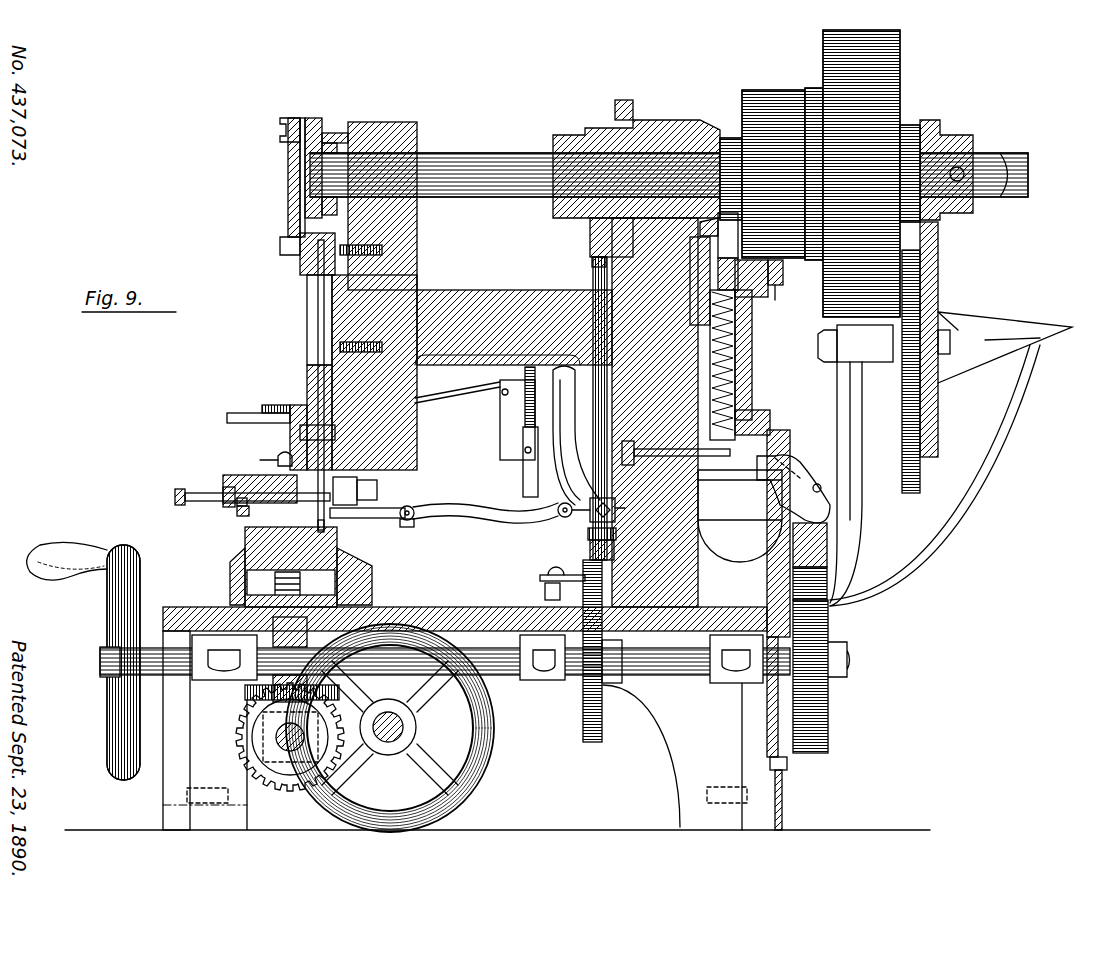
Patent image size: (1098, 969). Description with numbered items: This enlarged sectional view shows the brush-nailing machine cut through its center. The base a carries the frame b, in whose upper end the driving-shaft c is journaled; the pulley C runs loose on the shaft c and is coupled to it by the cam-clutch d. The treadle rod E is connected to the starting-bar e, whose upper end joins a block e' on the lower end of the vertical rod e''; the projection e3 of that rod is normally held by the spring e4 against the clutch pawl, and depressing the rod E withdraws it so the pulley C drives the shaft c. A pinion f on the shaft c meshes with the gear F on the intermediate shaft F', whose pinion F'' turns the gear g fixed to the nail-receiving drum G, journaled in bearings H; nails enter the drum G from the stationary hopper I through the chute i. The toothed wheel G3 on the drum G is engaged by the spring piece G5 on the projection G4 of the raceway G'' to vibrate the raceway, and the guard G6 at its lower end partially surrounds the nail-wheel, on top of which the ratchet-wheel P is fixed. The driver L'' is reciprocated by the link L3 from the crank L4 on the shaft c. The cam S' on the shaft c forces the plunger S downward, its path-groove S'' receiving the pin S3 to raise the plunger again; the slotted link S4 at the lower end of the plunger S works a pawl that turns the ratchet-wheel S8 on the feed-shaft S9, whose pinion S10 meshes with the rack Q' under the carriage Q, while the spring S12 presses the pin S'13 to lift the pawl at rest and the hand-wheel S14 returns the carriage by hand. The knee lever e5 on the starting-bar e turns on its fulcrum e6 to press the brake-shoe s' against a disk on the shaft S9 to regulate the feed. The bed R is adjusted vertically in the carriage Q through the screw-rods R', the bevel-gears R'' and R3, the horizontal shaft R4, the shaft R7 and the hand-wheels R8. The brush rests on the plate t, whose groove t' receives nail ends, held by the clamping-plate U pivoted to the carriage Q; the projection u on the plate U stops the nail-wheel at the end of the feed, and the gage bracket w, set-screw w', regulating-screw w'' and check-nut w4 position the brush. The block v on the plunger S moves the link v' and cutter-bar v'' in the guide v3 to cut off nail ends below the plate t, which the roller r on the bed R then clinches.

The frame b is at (466, 300).
The driving-shaft c is at (470, 166).
The crank L4 is at (280, 135).
The link L3 is at (288, 180).
The driver L'' is at (322, 299).
The path-groove S'' is at (608, 107).
The cam S' is at (595, 237).
The pin S3 is at (592, 262).
The plunger S is at (578, 408).
The cam-clutch d is at (760, 101).
The pulley C is at (861, 173).
The pinion f is at (936, 142).
The gear F is at (940, 339).
The gear g is at (905, 470).
The intermediate shaft F' is at (953, 340).
The pinion F'' is at (855, 465).
The stationary hopper I is at (951, 459).
The chute i is at (985, 342).
The projection e3 is at (719, 251).
The nail-receiving drum G is at (792, 506).
The spring e4 is at (740, 354).
The block e' is at (760, 414).
The vertical rod e'' is at (689, 453).
The cam or knee lever e5 is at (802, 463).
The fulcrum e6 is at (822, 489).
The starting-bar e is at (761, 593).
The brake-shoe s' is at (848, 558).
The treadle rod E is at (781, 787).
The guard G6 is at (227, 418).
The ratchet-wheel P is at (266, 409).
The projection u is at (282, 452).
The clamping-plate U is at (262, 478).
The check-nut w4 is at (223, 491).
The regulating-screw w'' is at (237, 488).
The set-screw w' is at (215, 515).
The angular bracket w is at (220, 525).
The longitudinal groove t' is at (345, 491).
The brush-supporting plate t is at (371, 491).
The roller r is at (324, 528).
The cutter-bar v'' is at (381, 501).
The link v' is at (492, 505).
The stationary guide v3 is at (405, 527).
The block v is at (610, 510).
The bed R is at (291, 567).
The screw-rods R' is at (291, 582).
The toothed rack Q' is at (218, 576).
The carriage Q is at (365, 576).
The base a is at (457, 612).
The hand-wheel S14 is at (118, 590).
The toothed wheel G3 is at (525, 374).
The raceway G'' is at (457, 404).
The projection G4 is at (500, 442).
The spring piece G5 is at (523, 478).
The bearings H is at (562, 484).
The slotted link S4 is at (608, 572).
The pin S'13 is at (545, 568).
The spring S12 is at (545, 592).
The feed-shaft S9 is at (692, 675).
The pinion S10 is at (320, 639).
The bevel-gear R'' is at (272, 688).
The hand-wheels R8 is at (494, 734).
The shaft R7 is at (403, 727).
The bevel-gear R3 is at (283, 791).
The horizontal shaft R4 is at (284, 740).
The ratchet-wheel S8 is at (592, 744).